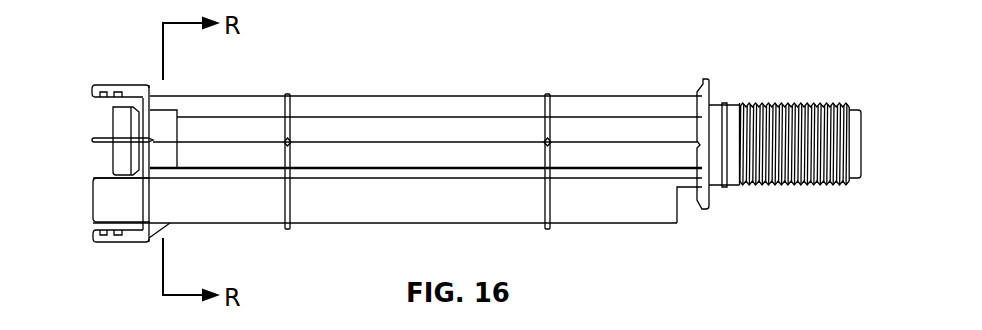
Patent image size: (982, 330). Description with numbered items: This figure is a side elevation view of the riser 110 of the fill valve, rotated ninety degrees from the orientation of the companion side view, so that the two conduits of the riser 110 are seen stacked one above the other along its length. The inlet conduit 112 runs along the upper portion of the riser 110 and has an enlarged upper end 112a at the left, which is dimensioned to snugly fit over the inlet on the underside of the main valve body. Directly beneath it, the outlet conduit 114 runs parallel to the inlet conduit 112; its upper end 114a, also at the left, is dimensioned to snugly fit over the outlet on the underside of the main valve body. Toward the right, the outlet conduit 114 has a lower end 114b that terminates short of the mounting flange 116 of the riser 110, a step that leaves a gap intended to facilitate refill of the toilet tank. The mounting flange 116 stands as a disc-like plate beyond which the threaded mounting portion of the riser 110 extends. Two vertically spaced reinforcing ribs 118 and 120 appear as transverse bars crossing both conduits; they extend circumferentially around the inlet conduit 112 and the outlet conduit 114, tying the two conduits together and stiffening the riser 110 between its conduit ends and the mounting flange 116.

The riser 110 is at (463, 75).
The inlet conduit 112 is at (377, 127).
The enlarged upper end 112a is at (112, 122).
The outlet conduit 114 is at (640, 213).
The upper end 114a is at (93, 197).
The lower end 114b is at (679, 217).
The mounting flange 116 is at (708, 85).
The reinforcing rib 118 is at (290, 202).
The reinforcing rib 120 is at (549, 203).